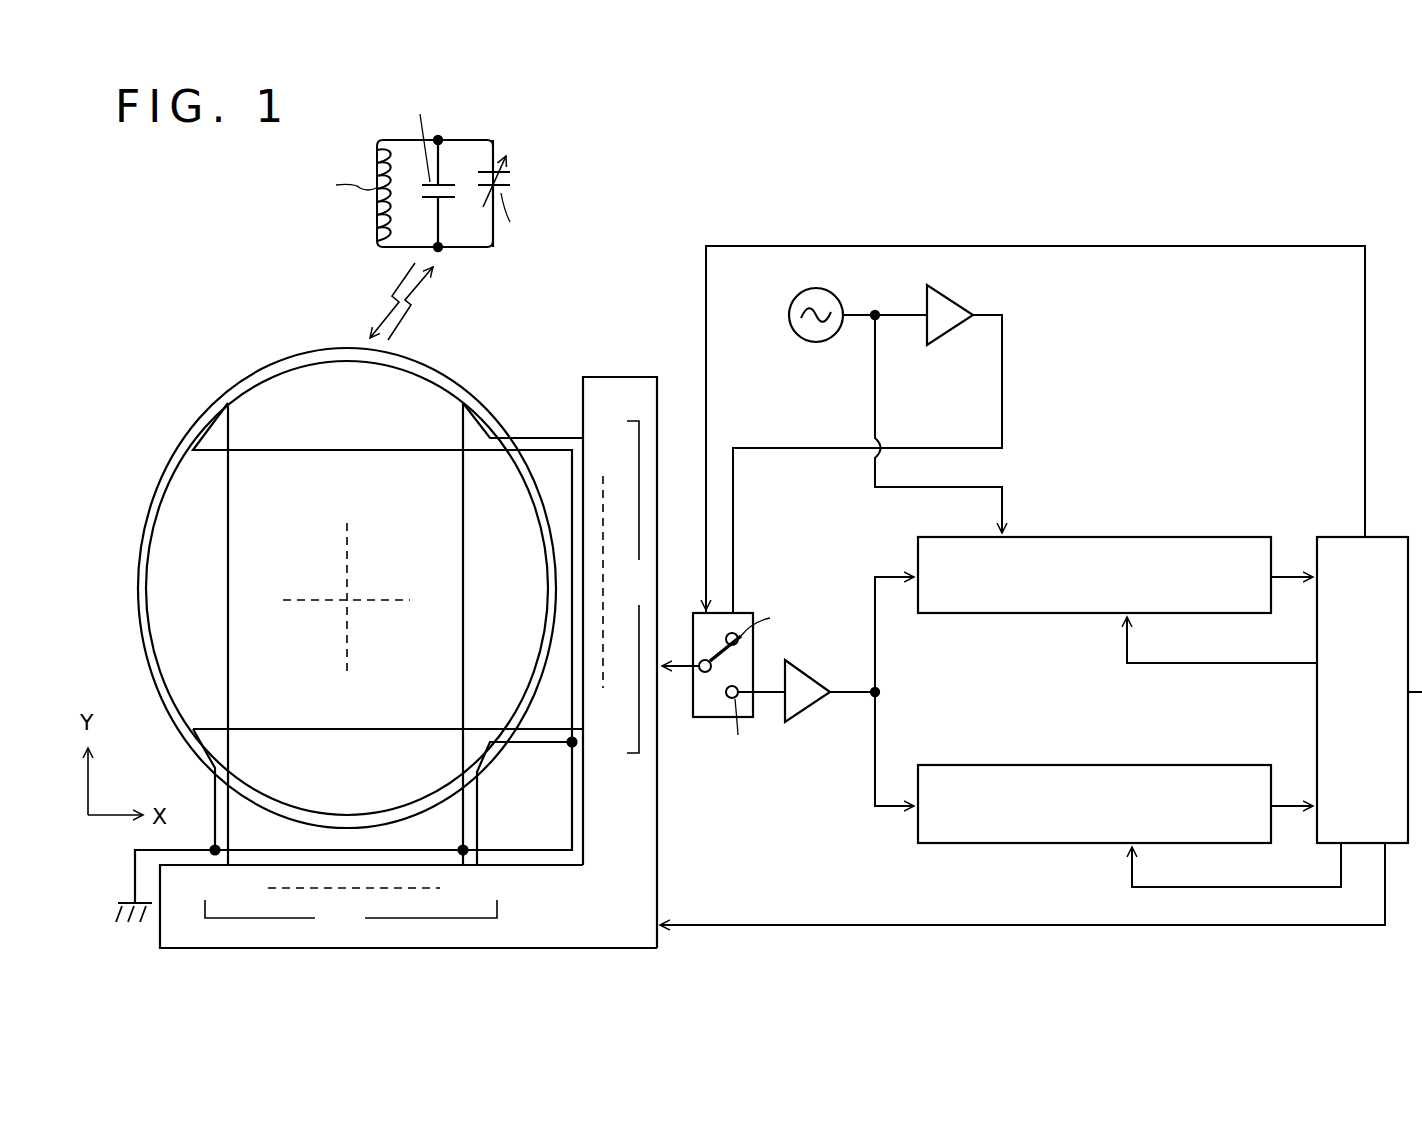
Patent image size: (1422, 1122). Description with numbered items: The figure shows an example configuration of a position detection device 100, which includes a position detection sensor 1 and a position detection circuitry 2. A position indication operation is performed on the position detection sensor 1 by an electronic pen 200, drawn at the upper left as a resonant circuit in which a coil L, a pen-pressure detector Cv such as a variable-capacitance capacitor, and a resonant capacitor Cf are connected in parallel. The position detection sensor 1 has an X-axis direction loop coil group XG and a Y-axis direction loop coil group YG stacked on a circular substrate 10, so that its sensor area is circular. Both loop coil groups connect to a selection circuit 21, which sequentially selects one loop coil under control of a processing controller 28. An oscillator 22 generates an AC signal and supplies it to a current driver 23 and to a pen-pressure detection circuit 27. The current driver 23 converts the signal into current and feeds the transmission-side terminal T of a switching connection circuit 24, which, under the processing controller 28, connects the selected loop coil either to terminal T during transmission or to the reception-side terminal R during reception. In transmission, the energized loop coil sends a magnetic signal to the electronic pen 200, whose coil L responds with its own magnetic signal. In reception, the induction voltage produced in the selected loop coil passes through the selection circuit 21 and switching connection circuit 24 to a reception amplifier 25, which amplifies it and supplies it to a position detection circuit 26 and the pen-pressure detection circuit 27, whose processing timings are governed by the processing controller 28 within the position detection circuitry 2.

The position detection sensor 1 is at (248, 356).
The circular substrate 10 is at (459, 382).
The selection circuit 21 is at (611, 377).
The oscillator 22 is at (808, 345).
The current driver 23 is at (953, 330).
The switching connection circuit 24 is at (705, 717).
The reception amplifier 25 is at (808, 705).
The position detection circuit 26 is at (1065, 765).
The pen-pressure detection circuit 27 is at (1140, 535).
The processing controller 28 is at (1390, 535).
The position detection device 100 is at (678, 983).
The electronic pen 200 is at (537, 98).
The position detection circuitry 2 is at (1103, 405).